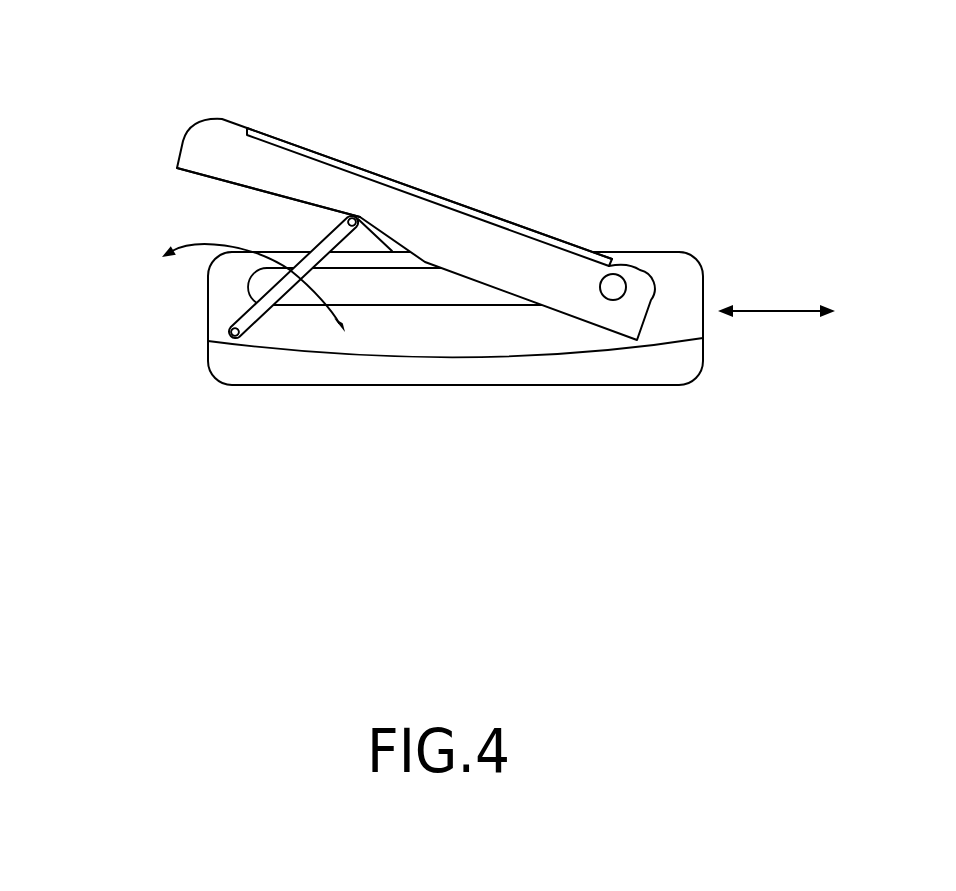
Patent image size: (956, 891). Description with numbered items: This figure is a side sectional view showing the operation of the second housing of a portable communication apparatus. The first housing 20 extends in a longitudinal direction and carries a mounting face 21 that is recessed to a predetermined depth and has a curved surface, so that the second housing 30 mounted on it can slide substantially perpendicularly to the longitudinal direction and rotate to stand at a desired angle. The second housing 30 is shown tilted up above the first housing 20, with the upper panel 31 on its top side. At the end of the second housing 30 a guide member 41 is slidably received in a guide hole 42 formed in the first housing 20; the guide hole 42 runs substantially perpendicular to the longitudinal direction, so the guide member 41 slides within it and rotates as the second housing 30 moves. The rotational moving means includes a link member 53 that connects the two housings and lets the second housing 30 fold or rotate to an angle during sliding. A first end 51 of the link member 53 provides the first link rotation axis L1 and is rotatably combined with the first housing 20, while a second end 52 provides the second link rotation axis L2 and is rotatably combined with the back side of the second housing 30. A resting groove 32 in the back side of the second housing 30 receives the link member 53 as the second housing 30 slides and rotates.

The first housing 20 is at (455, 364).
The mounting face 21 is at (512, 348).
The second housing 30 is at (391, 191).
The display panel 31 is at (297, 143).
The resting groove 32 is at (277, 197).
The guide member 41 is at (614, 287).
The guide hole 42 is at (400, 290).
The first end of the link member 51 is at (236, 340).
The second end of the link member 52 is at (356, 217).
The link member 53 is at (276, 312).
The first link rotation axis L1 is at (230, 333).
The second link rotation axis L2 is at (355, 217).